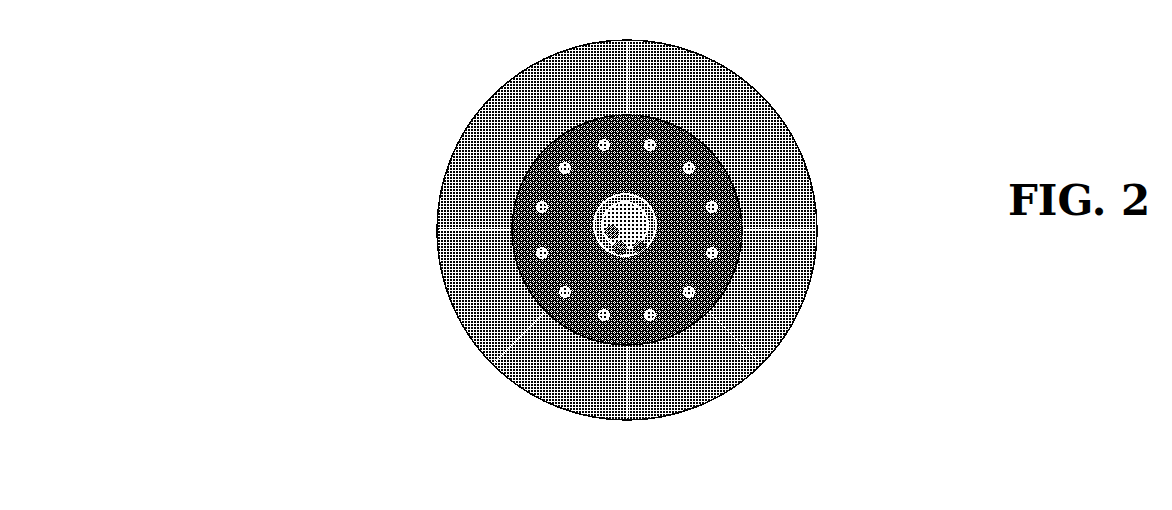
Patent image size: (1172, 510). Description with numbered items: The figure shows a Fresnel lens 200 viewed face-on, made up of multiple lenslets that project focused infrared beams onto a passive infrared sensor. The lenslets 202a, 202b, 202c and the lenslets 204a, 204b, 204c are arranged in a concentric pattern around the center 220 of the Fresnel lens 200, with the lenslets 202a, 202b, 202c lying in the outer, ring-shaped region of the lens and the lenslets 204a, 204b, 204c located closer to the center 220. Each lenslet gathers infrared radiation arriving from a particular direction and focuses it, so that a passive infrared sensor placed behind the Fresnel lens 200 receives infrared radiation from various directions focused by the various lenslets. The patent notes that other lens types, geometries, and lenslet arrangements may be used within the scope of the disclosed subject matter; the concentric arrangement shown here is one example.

The Fresnel lens 200 is at (875, 66).
The lenslet 202a is at (632, 118).
The lenslet 202b is at (698, 147).
The lenslet 202c is at (728, 194).
The center 220 is at (612, 224).
The lenslet 204a is at (597, 232).
The lenslet 204b is at (612, 258).
The lenslet 204c is at (645, 258).